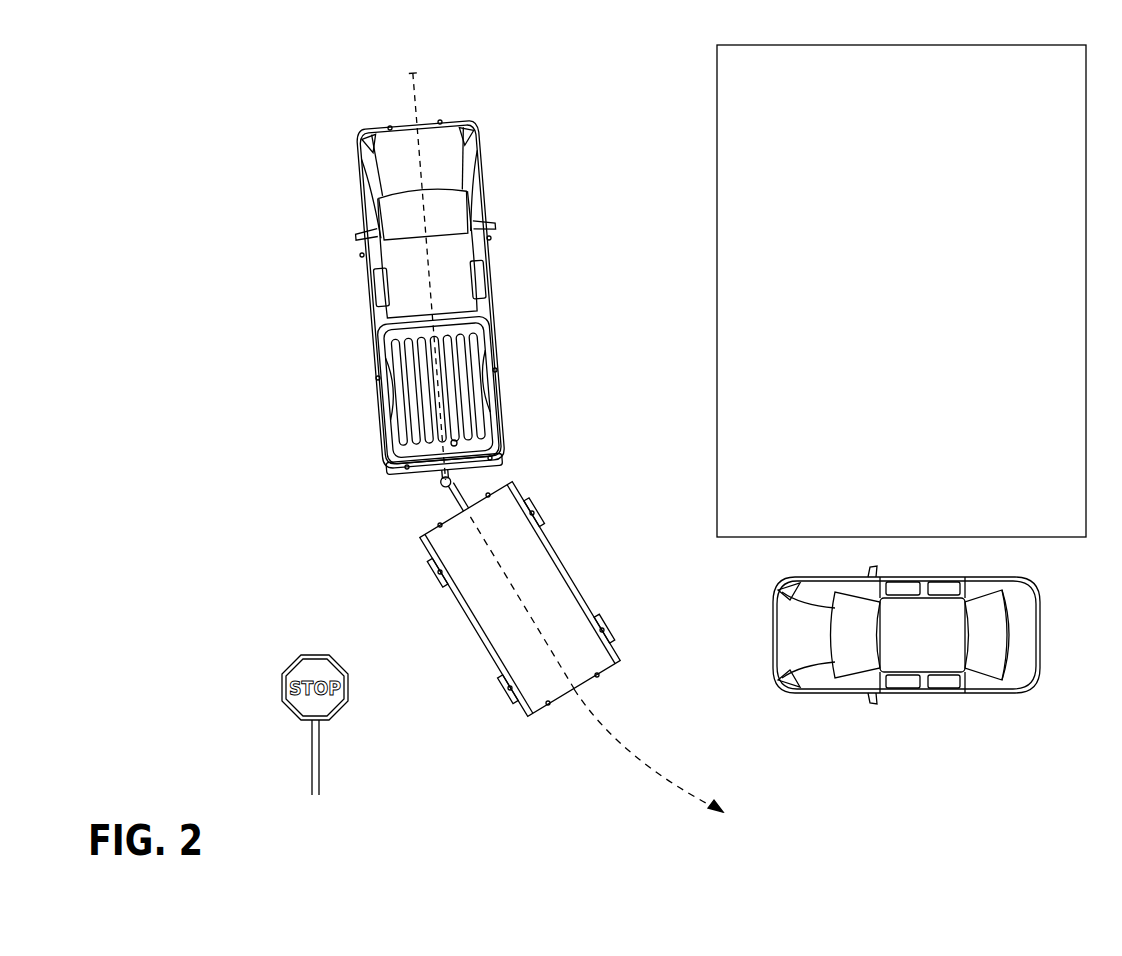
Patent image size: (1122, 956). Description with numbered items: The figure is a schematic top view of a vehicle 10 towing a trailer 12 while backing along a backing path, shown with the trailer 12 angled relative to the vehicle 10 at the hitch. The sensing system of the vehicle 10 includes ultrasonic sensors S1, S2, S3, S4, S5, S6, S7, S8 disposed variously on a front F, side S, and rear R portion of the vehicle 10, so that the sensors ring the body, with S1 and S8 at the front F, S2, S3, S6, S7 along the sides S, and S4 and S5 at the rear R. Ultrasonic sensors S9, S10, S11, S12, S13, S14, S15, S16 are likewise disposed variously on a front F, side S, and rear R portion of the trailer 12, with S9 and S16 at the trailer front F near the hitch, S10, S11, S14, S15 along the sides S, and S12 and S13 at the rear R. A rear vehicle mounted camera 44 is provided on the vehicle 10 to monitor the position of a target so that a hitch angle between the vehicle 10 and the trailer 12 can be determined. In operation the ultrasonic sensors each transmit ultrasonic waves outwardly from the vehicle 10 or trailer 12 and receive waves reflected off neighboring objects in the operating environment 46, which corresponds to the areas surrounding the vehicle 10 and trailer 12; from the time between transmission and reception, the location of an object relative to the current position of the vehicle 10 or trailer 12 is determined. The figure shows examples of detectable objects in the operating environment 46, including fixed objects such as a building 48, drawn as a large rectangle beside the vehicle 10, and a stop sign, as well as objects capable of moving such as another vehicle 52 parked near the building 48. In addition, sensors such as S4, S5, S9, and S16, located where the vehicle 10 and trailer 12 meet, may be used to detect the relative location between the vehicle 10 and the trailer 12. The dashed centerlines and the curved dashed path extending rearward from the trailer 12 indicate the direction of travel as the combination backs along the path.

The vehicle 10 is at (445, 175).
The trailer 12 is at (540, 570).
The rear vehicle mounted camera 44 is at (455, 440).
The operating environment 46 is at (638, 136).
The building 48 is at (918, 183).
The vehicle 52 is at (1015, 620).
The heading axis B is at (416, 76).
The front portion F is at (430, 125).
The rear portion R is at (440, 470).
The side portion S is at (378, 335).
The ultrasonic sensor S1 is at (440, 122).
The ultrasonic sensor S2 is at (490, 237).
The ultrasonic sensor S3 is at (495, 370).
The ultrasonic sensor S4 is at (490, 458).
The ultrasonic sensor S5 is at (407, 467).
The ultrasonic sensor S6 is at (378, 378).
The ultrasonic sensor S7 is at (362, 255).
The ultrasonic sensor S8 is at (390, 128).
The ultrasonic sensor S9 is at (490, 493).
The ultrasonic sensor S10 is at (534, 513).
The ultrasonic sensor S11 is at (604, 630).
The ultrasonic sensor S12 is at (600, 676).
The ultrasonic sensor S13 is at (548, 706).
The ultrasonic sensor S14 is at (510, 690).
The ultrasonic sensor S15 is at (440, 575).
The ultrasonic sensor S16 is at (438, 525).